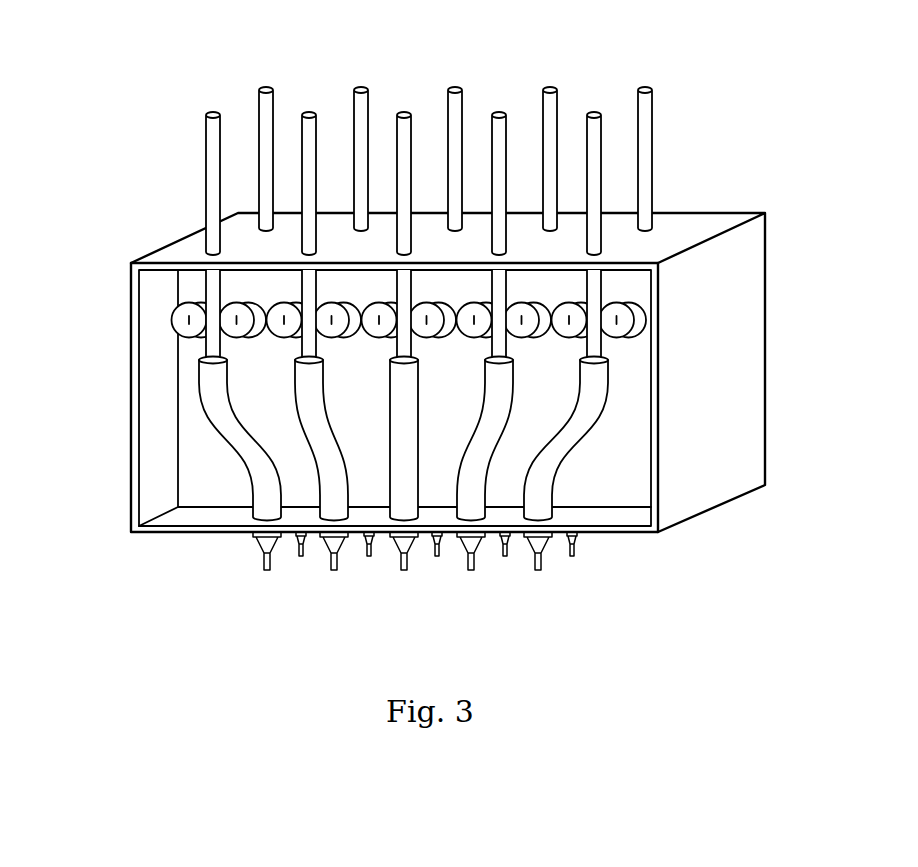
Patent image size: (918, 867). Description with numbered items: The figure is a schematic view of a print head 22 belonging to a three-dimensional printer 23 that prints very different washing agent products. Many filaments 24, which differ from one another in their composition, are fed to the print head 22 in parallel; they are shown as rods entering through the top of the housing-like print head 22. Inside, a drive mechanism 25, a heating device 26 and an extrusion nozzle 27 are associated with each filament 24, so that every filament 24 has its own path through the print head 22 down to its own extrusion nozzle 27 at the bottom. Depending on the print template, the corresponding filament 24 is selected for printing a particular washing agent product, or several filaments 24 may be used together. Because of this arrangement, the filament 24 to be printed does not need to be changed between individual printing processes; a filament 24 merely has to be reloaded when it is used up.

The print head 22 is at (747, 383).
The 3D printer 23 is at (119, 201).
The filaments 24 is at (212, 128).
The drive mechanism 25 is at (154, 343).
The heating device 26 is at (400, 460).
The extrusion nozzle 27 is at (333, 565).